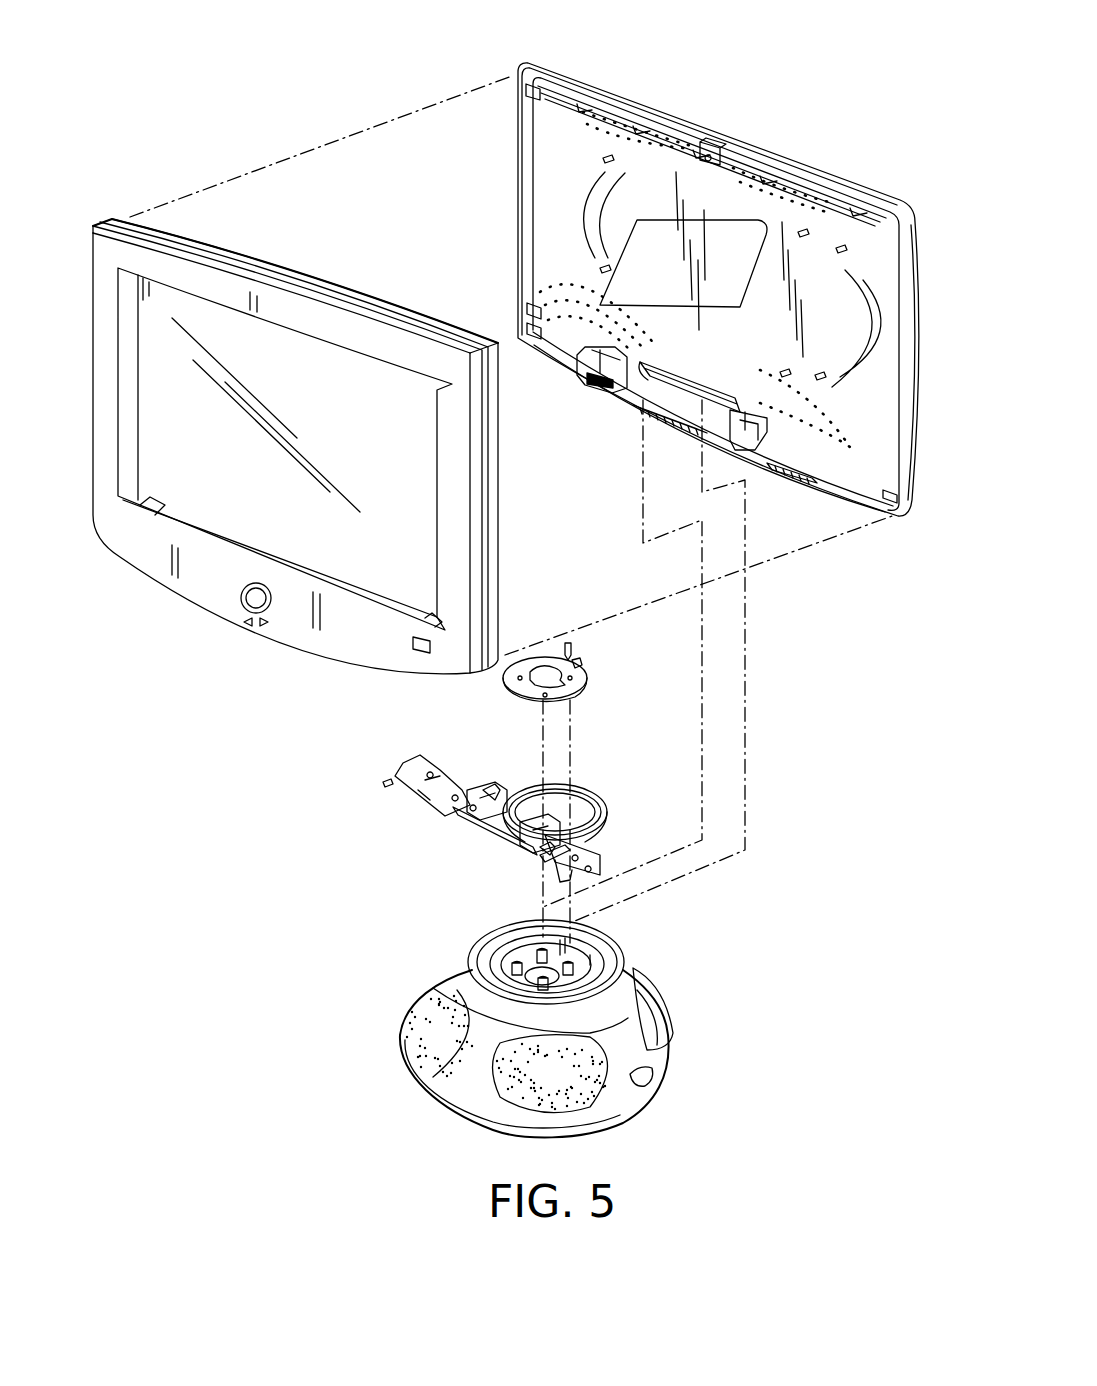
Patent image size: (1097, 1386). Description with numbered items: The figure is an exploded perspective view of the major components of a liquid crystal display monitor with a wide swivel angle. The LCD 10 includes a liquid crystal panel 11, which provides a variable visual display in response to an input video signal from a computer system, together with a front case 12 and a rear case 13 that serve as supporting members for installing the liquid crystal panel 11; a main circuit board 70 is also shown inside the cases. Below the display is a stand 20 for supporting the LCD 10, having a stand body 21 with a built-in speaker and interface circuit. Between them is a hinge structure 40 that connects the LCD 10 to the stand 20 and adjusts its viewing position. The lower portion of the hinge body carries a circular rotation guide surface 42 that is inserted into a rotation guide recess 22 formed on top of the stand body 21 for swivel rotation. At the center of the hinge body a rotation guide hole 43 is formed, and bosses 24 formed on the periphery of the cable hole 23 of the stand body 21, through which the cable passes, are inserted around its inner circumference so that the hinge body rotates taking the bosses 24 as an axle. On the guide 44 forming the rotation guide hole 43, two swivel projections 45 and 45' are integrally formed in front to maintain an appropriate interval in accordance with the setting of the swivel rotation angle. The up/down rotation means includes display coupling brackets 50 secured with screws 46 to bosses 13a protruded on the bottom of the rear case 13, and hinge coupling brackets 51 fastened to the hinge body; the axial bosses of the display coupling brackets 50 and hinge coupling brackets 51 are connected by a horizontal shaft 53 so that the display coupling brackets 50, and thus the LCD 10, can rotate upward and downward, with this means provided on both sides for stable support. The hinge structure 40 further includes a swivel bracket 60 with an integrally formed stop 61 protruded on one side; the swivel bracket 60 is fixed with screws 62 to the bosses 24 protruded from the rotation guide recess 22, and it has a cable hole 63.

The liquid crystal display 10 is at (752, 100).
The liquid crystal panel 11 is at (175, 495).
The front case 12 is at (323, 286).
The rear case 13 is at (913, 390).
The bosses 13a is at (583, 377).
The main circuit board 70 is at (650, 220).
The stand 20 is at (395, 1052).
The stand body 21 is at (620, 1018).
The rotation guide recess 22 is at (587, 972).
The cable hole 23 is at (567, 965).
The bosses 24 is at (512, 968).
The hinge structure 40 is at (430, 720).
The rotation guide surface 42 is at (587, 845).
The rotation guide hole 43 is at (573, 815).
The guide 44 is at (563, 792).
The swivel projection 45 is at (482, 835).
The swivel projection 45' is at (518, 884).
The screws 46 is at (388, 778).
The display coupling brackets 50 is at (420, 797).
The hinge coupling brackets 51 is at (483, 790).
The horizontal shaft 53 is at (480, 788).
The swivel bracket 60 is at (577, 687).
The stop 61 is at (575, 665).
The screws 62 is at (568, 643).
The cable hole 63 is at (537, 673).